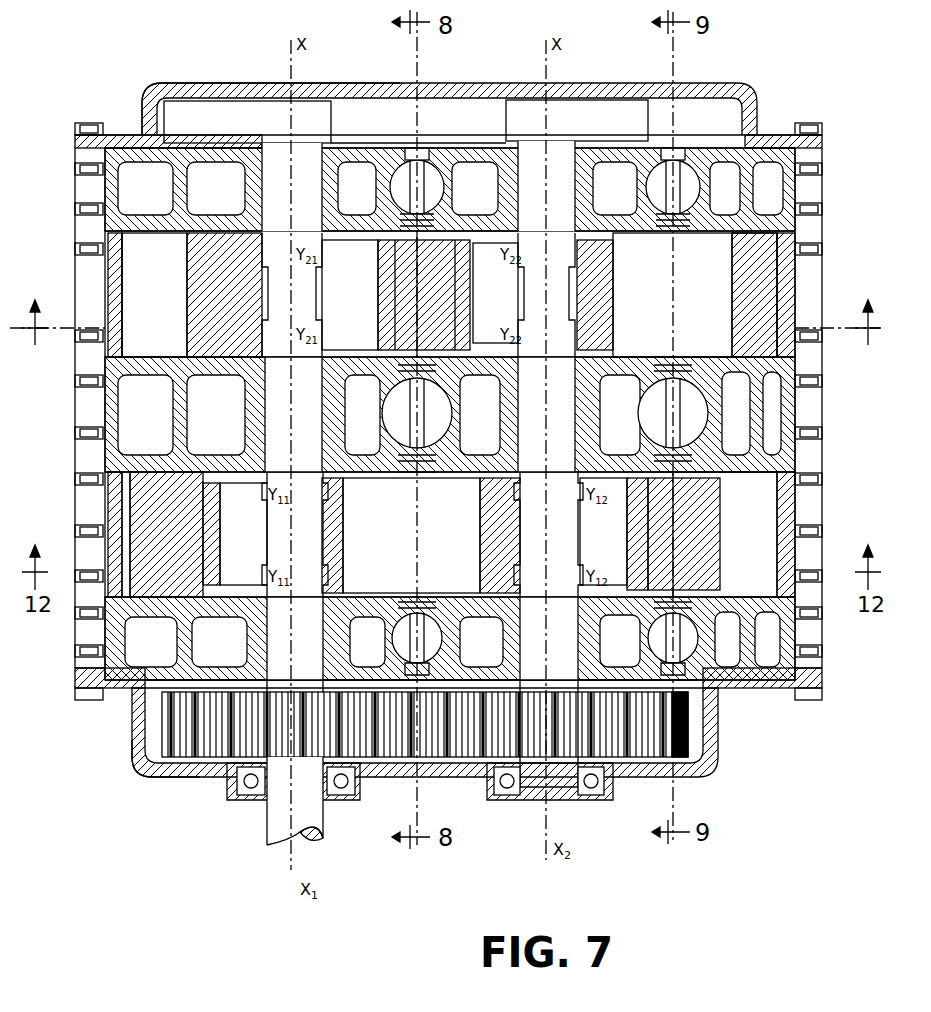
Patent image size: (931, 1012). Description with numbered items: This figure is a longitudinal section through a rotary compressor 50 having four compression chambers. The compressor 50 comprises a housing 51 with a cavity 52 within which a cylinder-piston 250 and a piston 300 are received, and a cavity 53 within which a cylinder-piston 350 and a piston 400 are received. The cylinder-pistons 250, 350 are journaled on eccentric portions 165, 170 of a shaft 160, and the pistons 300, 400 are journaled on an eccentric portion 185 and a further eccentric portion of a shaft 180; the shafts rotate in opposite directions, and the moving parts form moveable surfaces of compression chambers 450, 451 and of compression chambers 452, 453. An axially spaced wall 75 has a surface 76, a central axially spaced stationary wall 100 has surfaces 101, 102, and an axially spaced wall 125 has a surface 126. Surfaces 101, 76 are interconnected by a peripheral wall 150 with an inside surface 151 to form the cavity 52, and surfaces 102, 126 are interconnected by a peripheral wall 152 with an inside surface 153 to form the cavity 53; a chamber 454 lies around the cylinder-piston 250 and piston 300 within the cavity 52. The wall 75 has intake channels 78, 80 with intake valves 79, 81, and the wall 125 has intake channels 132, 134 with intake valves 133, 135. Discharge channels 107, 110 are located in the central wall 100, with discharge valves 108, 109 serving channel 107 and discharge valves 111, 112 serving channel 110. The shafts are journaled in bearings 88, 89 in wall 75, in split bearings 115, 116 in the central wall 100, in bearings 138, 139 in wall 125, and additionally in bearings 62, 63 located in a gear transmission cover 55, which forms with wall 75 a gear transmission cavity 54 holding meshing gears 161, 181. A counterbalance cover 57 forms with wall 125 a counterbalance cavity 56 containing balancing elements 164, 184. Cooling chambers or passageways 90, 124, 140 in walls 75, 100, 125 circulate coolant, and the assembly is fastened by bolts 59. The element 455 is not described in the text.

The rotary compressor 50 is at (733, 82).
The housing 51 is at (196, 82).
The counterbalance cover 57 is at (250, 82).
The balancing element 164 is at (244, 130).
The counterbalance cavity 56 is at (397, 128).
The balancing element 184 is at (594, 127).
The bearing 138 is at (263, 185).
The bearing 139 is at (519, 195).
The bearing 115 is at (266, 416).
The bearing 116 is at (519, 418).
The bearing 88 is at (268, 637).
The bearing 89 is at (522, 636).
The cooling chambers or passageways 140 is at (120, 190).
The intake valve 133 is at (440, 203).
The intake valve 135 is at (642, 196).
The intake channel 132 is at (424, 170).
The intake channel 134 is at (688, 170).
The peripheral wall 152 is at (108, 262).
The side wall passage 455 is at (122, 284).
The inside surface 153 is at (124, 306).
The cavity 53 is at (165, 300).
The cylinder-piston 350 is at (205, 262).
The eccentric portion 170 is at (367, 300).
The compression chamber 452 is at (378, 262).
The piston 400 is at (450, 330).
The shaft 180 is at (510, 298).
The compression chamber 453 is at (684, 300).
The surface 126 is at (735, 236).
The surface 102 is at (172, 357).
The discharge valve 112 is at (684, 357).
The central axially spaced stationary wall 100 is at (108, 414).
The cooling chambers or passageways 124 is at (122, 422).
The discharge channel 107 is at (461, 421).
The discharge valve 109 is at (407, 385).
The discharge channel 110 is at (723, 421).
The discharge valve 111 is at (665, 435).
The discharge valve 108 is at (410, 468).
The surface 101 is at (740, 470).
The peripheral wall 150 is at (118, 513).
The chamber 454 is at (128, 533).
The cavity 52 is at (132, 552).
The inside surface 151 is at (786, 542).
The eccentric portion 165 is at (257, 538).
The cylinder-piston 250 is at (195, 568).
The compression chamber 451 is at (692, 527).
The compression chamber 450 is at (432, 538).
The piston 300 is at (497, 552).
The eccentric portion 185 is at (618, 538).
The surface 76 is at (740, 596).
The cooling chambers or passageways 90 is at (127, 640).
The intake channel 78 is at (408, 597).
The intake valve 79 is at (432, 597).
The intake channel 80 is at (655, 640).
The intake valve 81 is at (652, 628).
The axially spaced wall 75 is at (110, 652).
The gear transmission cavity 54 is at (152, 722).
The gear transmission cover 55 is at (143, 778).
The gear 161 is at (193, 748).
The gear 181 is at (662, 736).
The bearing 62 is at (234, 788).
The bearing 63 is at (613, 775).
The shaft 160 is at (316, 814).
The bolts 59 is at (812, 124).
The axially spaced wall 125 is at (112, 178).